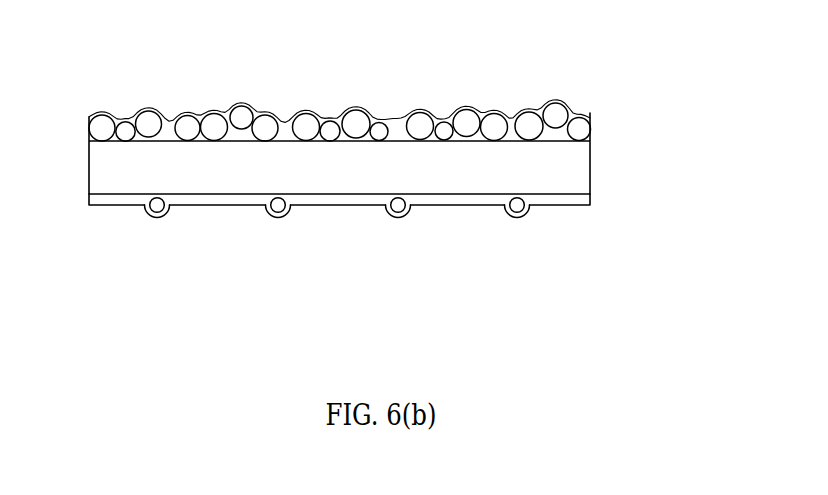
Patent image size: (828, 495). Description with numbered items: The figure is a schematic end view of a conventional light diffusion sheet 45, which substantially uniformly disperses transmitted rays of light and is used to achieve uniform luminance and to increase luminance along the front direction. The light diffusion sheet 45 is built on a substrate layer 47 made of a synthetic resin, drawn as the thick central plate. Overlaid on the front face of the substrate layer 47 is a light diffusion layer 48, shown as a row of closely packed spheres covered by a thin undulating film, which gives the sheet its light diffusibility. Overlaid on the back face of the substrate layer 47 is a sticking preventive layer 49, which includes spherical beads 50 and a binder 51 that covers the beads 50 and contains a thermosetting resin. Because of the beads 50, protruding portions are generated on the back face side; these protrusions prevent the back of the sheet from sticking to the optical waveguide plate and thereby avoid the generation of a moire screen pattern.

The light diffusion sheet 45 is at (607, 88).
The substrate layer 47 is at (580, 167).
The light diffusion layer 48 is at (597, 118).
The sticking preventive layer 49 is at (591, 210).
The spherical beads 50 is at (517, 206).
The binder 51 is at (439, 198).